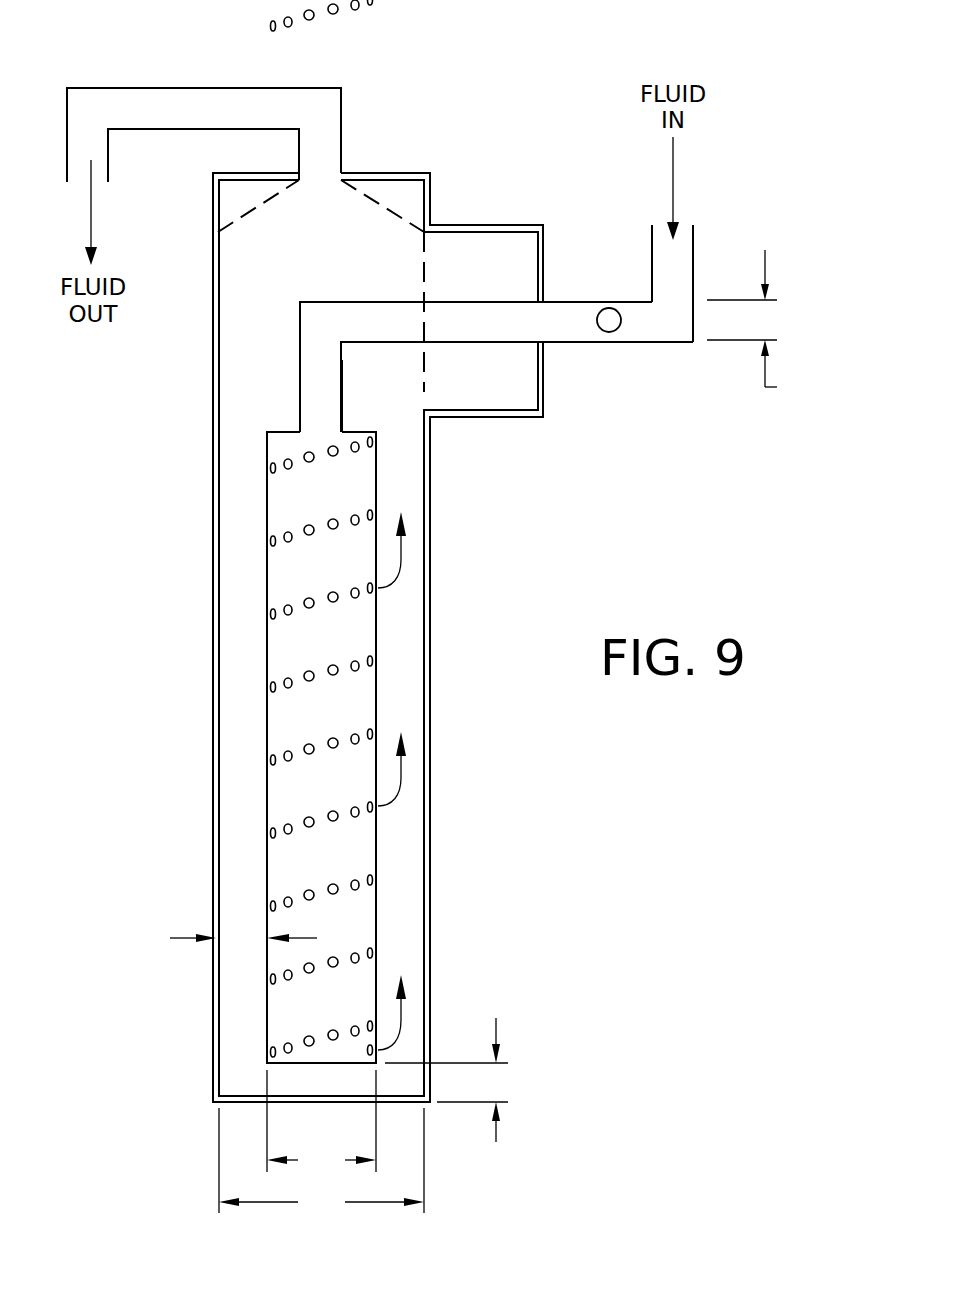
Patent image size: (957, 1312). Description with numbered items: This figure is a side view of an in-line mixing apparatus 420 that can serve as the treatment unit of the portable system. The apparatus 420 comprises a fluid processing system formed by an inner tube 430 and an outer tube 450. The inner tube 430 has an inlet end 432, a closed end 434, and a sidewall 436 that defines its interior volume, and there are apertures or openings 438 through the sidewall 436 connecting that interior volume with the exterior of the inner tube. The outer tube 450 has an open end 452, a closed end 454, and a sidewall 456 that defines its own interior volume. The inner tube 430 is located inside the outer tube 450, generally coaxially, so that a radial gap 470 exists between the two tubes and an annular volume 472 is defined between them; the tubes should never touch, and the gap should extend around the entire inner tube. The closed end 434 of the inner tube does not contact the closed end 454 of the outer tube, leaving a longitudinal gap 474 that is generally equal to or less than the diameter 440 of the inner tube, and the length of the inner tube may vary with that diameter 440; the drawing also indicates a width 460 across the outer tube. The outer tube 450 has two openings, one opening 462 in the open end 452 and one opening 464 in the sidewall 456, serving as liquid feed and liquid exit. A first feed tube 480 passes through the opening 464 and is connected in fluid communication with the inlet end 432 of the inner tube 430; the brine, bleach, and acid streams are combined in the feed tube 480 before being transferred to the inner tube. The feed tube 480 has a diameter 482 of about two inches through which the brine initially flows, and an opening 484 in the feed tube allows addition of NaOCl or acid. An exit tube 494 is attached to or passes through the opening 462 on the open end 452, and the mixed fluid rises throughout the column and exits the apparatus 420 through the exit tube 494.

The apparatus 420 is at (480, 903).
The inner tube 430 is at (376, 492).
The inlet end 432 is at (282, 432).
The closed end 434 is at (335, 1063).
The sidewall 436 is at (267, 507).
The openings 438 is at (273, 613).
The diameter 440 is at (321, 1121).
The outer tube 450 is at (430, 721).
The open end 452 is at (477, 223).
The closed end 454 is at (240, 1102).
The sidewall 456 is at (430, 843).
The housing width 460 is at (321, 1161).
The opening 462 is at (319, 175).
The opening 464 is at (538, 322).
The radial gap 470 is at (243, 938).
The annular volume 472 is at (263, 806).
The longitudinal gap 474 is at (455, 1080).
The first feed tube 480 is at (658, 342).
The diameter 482 is at (767, 326).
The opening 484 is at (608, 332).
The exit tube 494 is at (282, 87).